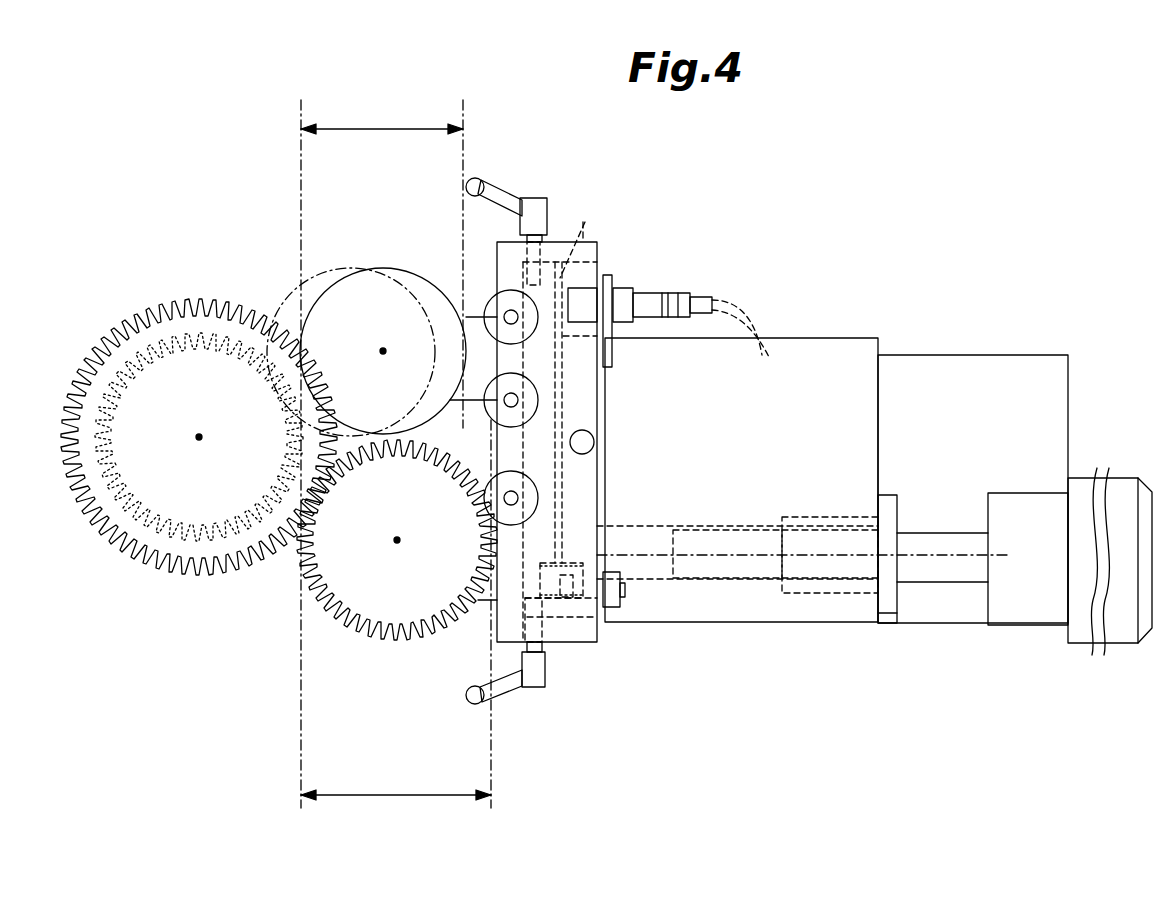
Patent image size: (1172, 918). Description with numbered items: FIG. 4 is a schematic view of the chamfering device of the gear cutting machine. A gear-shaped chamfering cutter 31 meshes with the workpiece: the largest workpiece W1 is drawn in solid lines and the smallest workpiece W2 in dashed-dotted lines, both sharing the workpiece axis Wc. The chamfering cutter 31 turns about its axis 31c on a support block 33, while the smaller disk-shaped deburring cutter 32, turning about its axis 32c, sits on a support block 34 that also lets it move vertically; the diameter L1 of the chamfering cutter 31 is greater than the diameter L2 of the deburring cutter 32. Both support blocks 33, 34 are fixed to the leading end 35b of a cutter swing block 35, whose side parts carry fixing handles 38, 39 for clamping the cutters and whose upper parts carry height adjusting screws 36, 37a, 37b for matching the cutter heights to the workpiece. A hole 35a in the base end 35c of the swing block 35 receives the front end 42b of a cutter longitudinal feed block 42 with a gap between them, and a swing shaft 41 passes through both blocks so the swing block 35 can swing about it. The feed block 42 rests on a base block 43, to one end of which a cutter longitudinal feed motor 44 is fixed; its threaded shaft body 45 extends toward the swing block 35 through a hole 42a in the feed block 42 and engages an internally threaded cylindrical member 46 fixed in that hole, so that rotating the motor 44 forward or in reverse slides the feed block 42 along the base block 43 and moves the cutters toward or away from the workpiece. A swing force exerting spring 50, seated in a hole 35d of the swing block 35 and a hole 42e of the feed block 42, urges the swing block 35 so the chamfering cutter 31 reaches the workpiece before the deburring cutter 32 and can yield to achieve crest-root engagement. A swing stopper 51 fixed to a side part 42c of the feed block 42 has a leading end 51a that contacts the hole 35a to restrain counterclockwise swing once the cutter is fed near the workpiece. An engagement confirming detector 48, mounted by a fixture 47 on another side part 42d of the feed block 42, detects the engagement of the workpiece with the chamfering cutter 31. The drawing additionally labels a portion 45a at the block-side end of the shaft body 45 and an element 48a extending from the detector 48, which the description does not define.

The workpiece of largest shape W1 is at (102, 347).
The workpiece of smallest shape W2 is at (152, 535).
The axis of the workpiece Wc is at (199, 437).
The chamfering cutter 31 is at (407, 622).
The axis of the chamfering cutter 31c is at (397, 540).
The deburring cutter 32 is at (389, 270).
The axis of the deburring cutter 32c is at (382, 349).
The support block 33 is at (475, 600).
The support block 34 is at (476, 316).
The cutter swing block 35 is at (552, 250).
The hole 35a is at (600, 268).
The leading end 35b is at (497, 262).
The base end 35c is at (603, 262).
The hole 35d is at (552, 650).
The height adjusting screw 36 is at (497, 478).
The height adjusting screw 37a is at (517, 297).
The height adjusting screw 37b is at (494, 405).
The fixing handle 38 is at (545, 690).
The fixing handle 39 is at (540, 198).
The swing shaft 41 is at (590, 451).
The cutter longitudinal feed block 42 is at (825, 355).
The hole 42a is at (703, 580).
The front end 42b is at (657, 580).
The side part 42c is at (837, 557).
The side part 42d is at (790, 337).
The hole 42e is at (608, 560).
The base block 43 is at (1028, 380).
The cutter longitudinal feed motor 44 is at (1123, 492).
The shaft body 45 is at (963, 570).
The shaft flange 45a is at (895, 605).
The cylindrical member 46 is at (952, 627).
The fixture 47 is at (620, 275).
The engagement confirming detector 48 is at (640, 300).
The sensor cable 48a is at (564, 241).
The swing force exerting spring 50 is at (583, 595).
The swing stopper 51 is at (633, 595).
The leading end 51a is at (563, 598).
The diameter of the chamfering cutter L1 is at (396, 809).
The diameter of the deburring cutter L2 is at (382, 115).